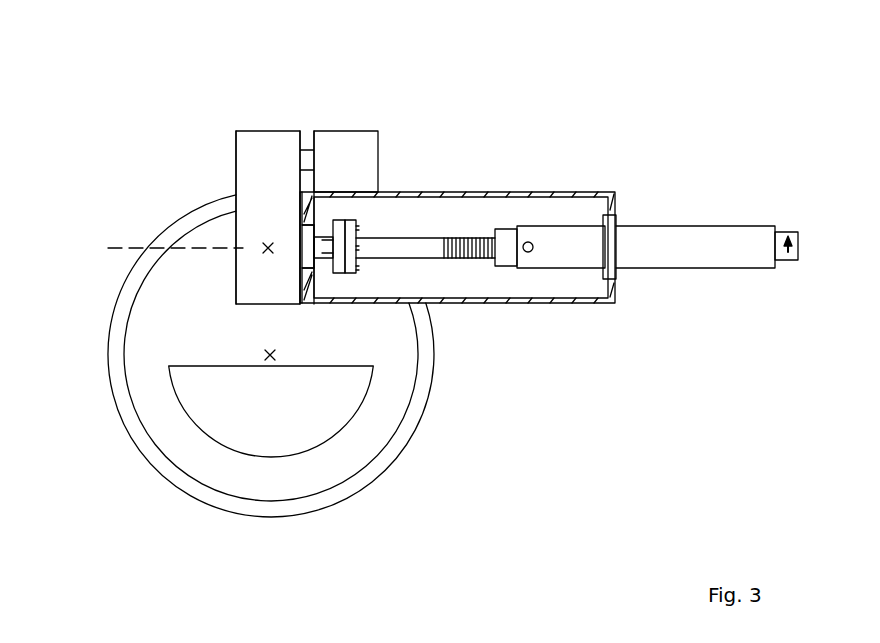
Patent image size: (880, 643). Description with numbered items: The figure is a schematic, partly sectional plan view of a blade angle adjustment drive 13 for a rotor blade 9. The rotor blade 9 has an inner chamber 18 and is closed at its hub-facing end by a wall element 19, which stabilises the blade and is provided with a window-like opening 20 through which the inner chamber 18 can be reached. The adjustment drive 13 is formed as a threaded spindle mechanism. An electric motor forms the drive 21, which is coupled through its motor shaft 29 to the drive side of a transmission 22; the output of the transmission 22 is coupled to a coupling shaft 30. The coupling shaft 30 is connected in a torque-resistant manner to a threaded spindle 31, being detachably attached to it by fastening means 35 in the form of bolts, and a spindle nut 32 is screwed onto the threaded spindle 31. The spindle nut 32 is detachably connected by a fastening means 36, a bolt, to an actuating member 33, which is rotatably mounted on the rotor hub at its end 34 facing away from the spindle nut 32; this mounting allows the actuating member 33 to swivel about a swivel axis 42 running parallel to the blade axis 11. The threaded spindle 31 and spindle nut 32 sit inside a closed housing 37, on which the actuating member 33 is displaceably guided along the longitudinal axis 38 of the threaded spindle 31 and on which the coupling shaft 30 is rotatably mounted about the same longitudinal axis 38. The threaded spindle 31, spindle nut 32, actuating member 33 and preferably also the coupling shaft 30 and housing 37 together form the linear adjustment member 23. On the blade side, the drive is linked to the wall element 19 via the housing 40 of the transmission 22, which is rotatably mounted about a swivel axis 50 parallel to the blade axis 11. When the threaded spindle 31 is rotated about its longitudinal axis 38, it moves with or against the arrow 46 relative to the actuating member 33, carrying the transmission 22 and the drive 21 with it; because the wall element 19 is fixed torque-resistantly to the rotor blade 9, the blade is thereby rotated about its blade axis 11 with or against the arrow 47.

The rotor blade 9 is at (180, 490).
The blade axis 11 is at (268, 354).
The blade angle adjustment drive 13 is at (602, 79).
The inner chamber 18 is at (207, 418).
The wall element 19 is at (350, 460).
The window-like opening 20 is at (262, 447).
The drive 21 is at (356, 143).
The transmission 22 is at (252, 138).
The linear adjustment member 23 is at (478, 304).
The motor shaft 29 is at (306, 150).
The coupling shaft 30 is at (320, 262).
The threaded spindle 31 is at (452, 238).
The spindle nut 32 is at (507, 229).
The actuating member 33 is at (700, 228).
The end 34 is at (790, 232).
The fastening means 35 is at (356, 225).
The fastening means 36 is at (530, 253).
The housing 37 is at (613, 292).
The longitudinal axis 38 is at (132, 248).
The housing of the transmission 40 is at (236, 152).
The swivel axis 42 is at (795, 262).
The arrow 46 is at (385, 248).
The arrow 47 is at (90, 333).
The swivel axis 50 is at (268, 243).